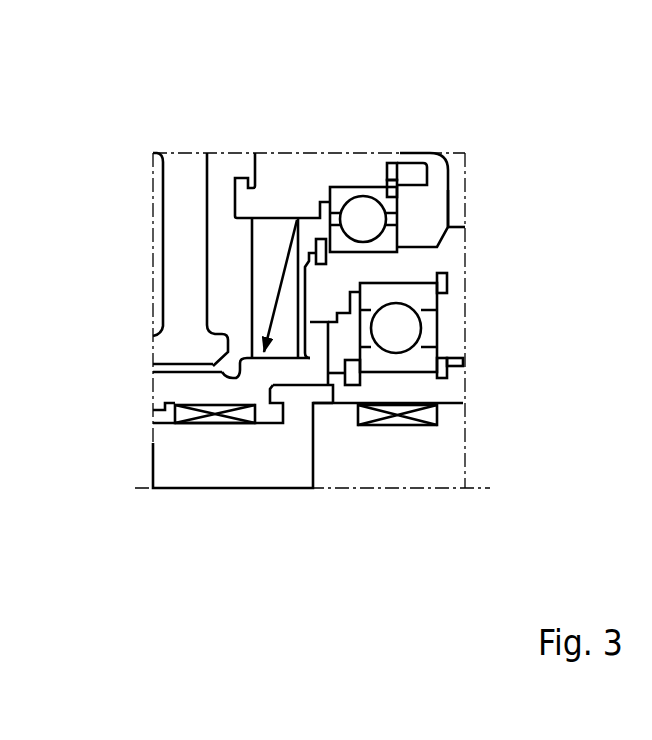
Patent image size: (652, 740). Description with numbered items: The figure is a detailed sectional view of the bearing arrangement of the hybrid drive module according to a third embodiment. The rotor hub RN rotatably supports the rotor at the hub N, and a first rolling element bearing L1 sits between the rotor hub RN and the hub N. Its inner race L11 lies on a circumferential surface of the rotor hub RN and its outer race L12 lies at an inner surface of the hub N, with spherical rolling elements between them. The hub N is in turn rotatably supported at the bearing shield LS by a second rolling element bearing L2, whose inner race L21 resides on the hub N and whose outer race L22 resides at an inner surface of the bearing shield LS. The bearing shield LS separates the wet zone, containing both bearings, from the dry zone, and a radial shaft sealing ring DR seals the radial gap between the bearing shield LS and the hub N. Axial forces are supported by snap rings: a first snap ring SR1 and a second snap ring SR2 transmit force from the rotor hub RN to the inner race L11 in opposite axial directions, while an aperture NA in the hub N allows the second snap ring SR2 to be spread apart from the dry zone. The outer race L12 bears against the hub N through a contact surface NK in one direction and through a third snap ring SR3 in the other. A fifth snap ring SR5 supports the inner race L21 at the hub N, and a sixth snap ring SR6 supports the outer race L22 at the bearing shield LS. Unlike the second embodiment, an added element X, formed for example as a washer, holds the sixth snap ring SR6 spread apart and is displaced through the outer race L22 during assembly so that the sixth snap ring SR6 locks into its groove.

The bearing shield LS is at (283, 183).
The outer race of the second rolling element bearing L22 is at (343, 195).
The sixth snap ring SR6 is at (389, 163).
The added element X is at (391, 235).
The second rolling element bearing L2 is at (419, 201).
The inner race of the second rolling element bearing L21 is at (392, 235).
The outer race of the first rolling element bearing L12 is at (405, 292).
The third snap ring SR3 is at (450, 284).
The first rolling element bearing L1 is at (447, 339).
The first snap ring SR1 is at (447, 375).
The fifth snap ring SR5 is at (316, 245).
The radial shaft sealing ring DR is at (268, 282).
The contact surface NK is at (352, 288).
The hub N is at (207, 388).
The rotor hub RN is at (208, 465).
The aperture NA is at (318, 330).
The second snap ring SR2 is at (352, 378).
The inner race of the first rolling element bearing L11 is at (418, 358).